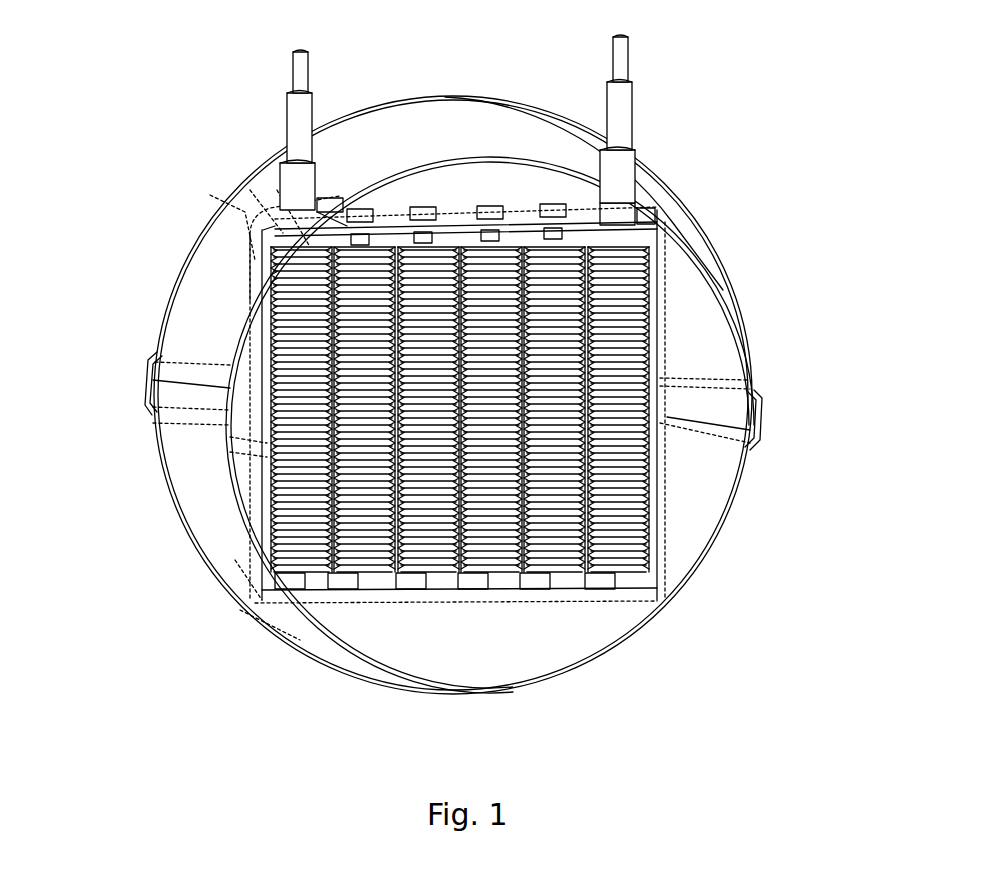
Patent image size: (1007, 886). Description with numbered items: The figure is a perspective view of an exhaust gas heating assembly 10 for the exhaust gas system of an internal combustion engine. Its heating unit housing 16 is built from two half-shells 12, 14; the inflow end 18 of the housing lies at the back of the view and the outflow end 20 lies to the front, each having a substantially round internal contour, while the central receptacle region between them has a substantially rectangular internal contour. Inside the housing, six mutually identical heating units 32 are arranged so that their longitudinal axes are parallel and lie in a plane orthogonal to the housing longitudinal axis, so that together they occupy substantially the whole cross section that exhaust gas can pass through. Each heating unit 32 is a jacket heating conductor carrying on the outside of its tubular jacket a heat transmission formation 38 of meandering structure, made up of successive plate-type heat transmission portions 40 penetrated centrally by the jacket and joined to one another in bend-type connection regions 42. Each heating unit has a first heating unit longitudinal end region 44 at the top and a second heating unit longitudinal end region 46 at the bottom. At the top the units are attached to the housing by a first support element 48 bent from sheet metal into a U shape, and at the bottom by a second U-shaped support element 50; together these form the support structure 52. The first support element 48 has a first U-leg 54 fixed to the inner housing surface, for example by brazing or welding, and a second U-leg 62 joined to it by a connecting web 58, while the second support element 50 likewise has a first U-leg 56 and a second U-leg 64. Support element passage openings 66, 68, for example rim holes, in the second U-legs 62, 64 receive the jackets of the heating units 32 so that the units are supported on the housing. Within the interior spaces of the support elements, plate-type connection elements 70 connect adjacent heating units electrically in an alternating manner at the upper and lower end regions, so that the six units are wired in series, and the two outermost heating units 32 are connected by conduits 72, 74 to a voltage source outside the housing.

The exhaust gas heating assembly 10 is at (760, 71).
The half-shell 12 is at (170, 283).
The half-shell 14 is at (175, 475).
The heating unit housing 16 is at (128, 447).
The inflow end 18 is at (87, 230).
The outflow end 20 is at (453, 671).
The heating unit 32 is at (653, 517).
The heat transmission formation 38 is at (267, 515).
The heat transmission portion 40 is at (653, 500).
The connection region 42 is at (549, 513).
The first heating unit longitudinal end region 44 is at (430, 198).
The second heating unit longitudinal end region 46 is at (483, 593).
The first support element 48 is at (647, 216).
The second support element 50 is at (627, 570).
The support structure 52 is at (229, 640).
The first U-leg 54 is at (610, 208).
The first U-leg 56 is at (433, 580).
The connecting web 58 is at (458, 232).
The second U-leg 62 is at (647, 240).
The second U-leg 64 is at (590, 587).
The support element passage opening 66 is at (330, 260).
The support element passage opening 68 is at (340, 590).
The connection element 70 is at (387, 232).
The conduit 72 is at (283, 177).
The conduit 74 is at (632, 103).